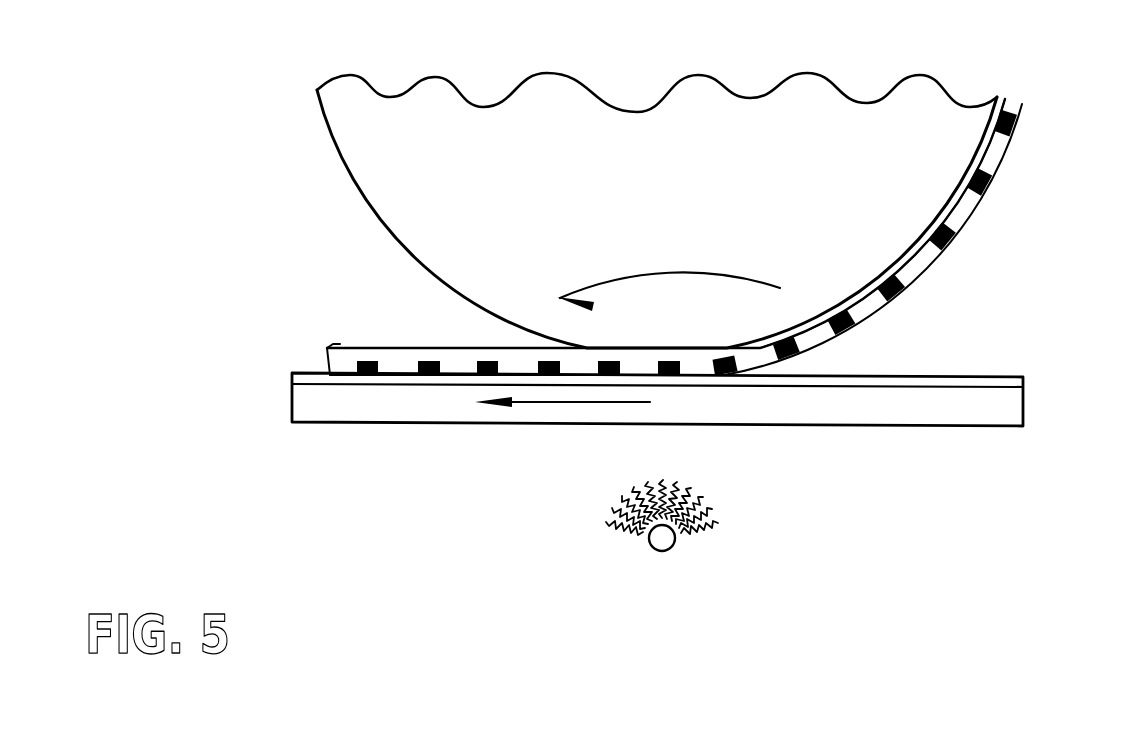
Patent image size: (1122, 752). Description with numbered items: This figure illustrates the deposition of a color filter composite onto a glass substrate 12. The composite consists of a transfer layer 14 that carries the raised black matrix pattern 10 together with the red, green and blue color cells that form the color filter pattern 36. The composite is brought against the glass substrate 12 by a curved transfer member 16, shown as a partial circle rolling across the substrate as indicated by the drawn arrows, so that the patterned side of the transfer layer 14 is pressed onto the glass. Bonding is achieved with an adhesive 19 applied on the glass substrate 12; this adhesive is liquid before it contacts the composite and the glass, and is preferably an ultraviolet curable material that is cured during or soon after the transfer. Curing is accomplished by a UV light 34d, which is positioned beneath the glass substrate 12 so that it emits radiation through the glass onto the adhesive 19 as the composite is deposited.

The black matrix pattern 10 is at (952, 237).
The glass substrate 12 is at (1023, 388).
The transfer layer 14 is at (910, 257).
The lens / roller 16 is at (352, 142).
The adhesive 19 is at (990, 380).
The color filter pattern 36 is at (1008, 163).
The UV light 34d is at (650, 546).